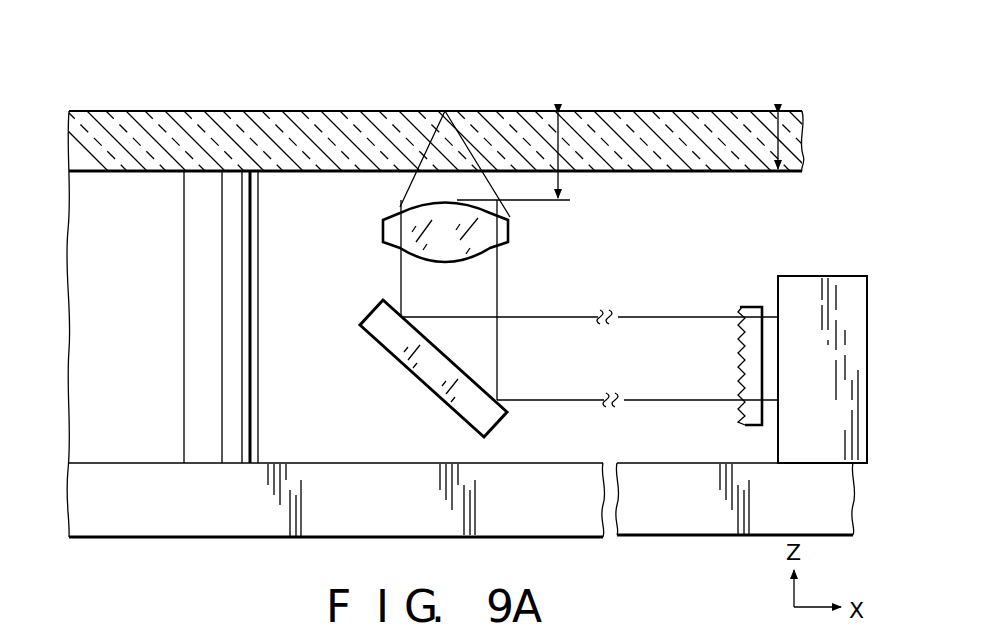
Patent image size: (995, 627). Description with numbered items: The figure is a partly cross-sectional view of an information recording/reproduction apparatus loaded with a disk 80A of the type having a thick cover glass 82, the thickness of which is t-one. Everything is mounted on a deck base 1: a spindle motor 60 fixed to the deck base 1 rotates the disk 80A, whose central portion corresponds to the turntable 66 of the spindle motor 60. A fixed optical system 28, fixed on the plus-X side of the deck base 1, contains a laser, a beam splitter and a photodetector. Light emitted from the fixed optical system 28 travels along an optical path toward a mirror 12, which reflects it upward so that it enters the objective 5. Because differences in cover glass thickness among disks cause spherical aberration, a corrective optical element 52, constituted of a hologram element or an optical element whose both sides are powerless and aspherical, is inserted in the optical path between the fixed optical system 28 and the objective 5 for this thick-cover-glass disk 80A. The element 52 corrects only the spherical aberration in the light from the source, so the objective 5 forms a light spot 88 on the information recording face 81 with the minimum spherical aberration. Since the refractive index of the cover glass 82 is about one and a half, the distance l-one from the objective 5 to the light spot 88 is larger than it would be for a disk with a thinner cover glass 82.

The disk 80A is at (448, 101).
The information recording face 81 is at (538, 110).
The cover glass 82 is at (656, 114).
The light spot 88 is at (445, 110).
The objective 5 is at (510, 228).
The mirror 12 is at (405, 350).
The turntable 66 is at (237, 252).
The spindle motor 60 is at (268, 352).
The corrective optical element 52 is at (752, 305).
The fixed optical system 28 is at (811, 283).
The deck base 1 is at (710, 522).